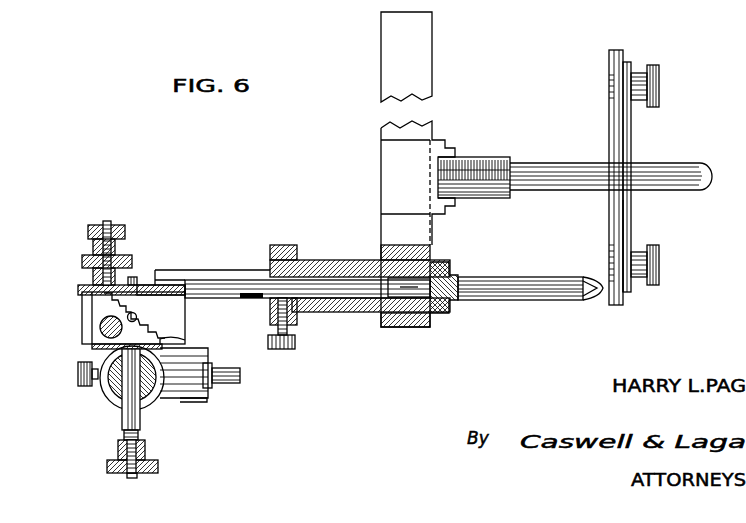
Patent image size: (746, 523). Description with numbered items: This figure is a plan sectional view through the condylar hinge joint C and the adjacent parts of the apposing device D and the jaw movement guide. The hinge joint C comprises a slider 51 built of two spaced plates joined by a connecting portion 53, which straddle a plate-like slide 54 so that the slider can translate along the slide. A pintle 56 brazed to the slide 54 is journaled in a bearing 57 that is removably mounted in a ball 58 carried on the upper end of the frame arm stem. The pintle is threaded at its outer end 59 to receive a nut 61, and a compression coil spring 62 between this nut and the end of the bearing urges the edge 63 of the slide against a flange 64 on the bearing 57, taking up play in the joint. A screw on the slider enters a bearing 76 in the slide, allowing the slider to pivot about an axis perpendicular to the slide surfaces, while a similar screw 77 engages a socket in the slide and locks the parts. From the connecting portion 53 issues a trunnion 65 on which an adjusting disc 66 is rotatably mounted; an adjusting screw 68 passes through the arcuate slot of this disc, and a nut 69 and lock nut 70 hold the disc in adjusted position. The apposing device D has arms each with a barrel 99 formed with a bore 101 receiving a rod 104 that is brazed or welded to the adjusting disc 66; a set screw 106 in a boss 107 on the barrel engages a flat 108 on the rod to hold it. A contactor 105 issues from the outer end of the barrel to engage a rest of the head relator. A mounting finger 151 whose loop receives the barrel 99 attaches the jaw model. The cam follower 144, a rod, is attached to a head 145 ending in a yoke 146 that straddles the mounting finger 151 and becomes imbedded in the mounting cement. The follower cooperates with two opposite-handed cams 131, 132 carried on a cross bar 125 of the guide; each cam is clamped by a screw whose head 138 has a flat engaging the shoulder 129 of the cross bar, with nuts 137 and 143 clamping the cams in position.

The slider 51 is at (90, 304).
The connecting portion 53 is at (170, 287).
The slide 54 is at (168, 321).
The pintle 56 is at (138, 402).
The bearing 57 is at (122, 416).
The ball 58 is at (157, 386).
The threaded end of pintle 59 is at (133, 477).
The nut 61 is at (158, 467).
The compression coil spring 62 is at (124, 431).
The edge of slide 63 is at (180, 341).
The flange 64 is at (112, 353).
The trunnion 65 is at (135, 279).
The adjusting disc 66 is at (160, 285).
The adjusting screw 68 is at (108, 221).
The nut 69 is at (122, 256).
The lock nut 70 is at (122, 240).
The bearing 76 is at (137, 316).
The screw 77 is at (108, 327).
The barrel 99 is at (309, 260).
The bore 101 is at (340, 260).
The rod 104 is at (218, 282).
The contactor 105 is at (515, 281).
The set screw 106 is at (284, 350).
The boss 107 is at (292, 314).
The flat 108 is at (325, 296).
The cross bar 125 is at (626, 151).
The shoulder 129 is at (615, 120).
The cam 131 is at (627, 217).
The cam 132 is at (628, 128).
The nut 137 is at (660, 261).
The head 138 is at (618, 84).
The nut 143 is at (655, 82).
The cam follower 144 is at (690, 172).
The head 145 is at (490, 159).
The yoke 146 is at (393, 178).
The mounting finger 151 is at (386, 80).
The condylar hinge joint C is at (110, 383).
The apposing device D is at (437, 318).